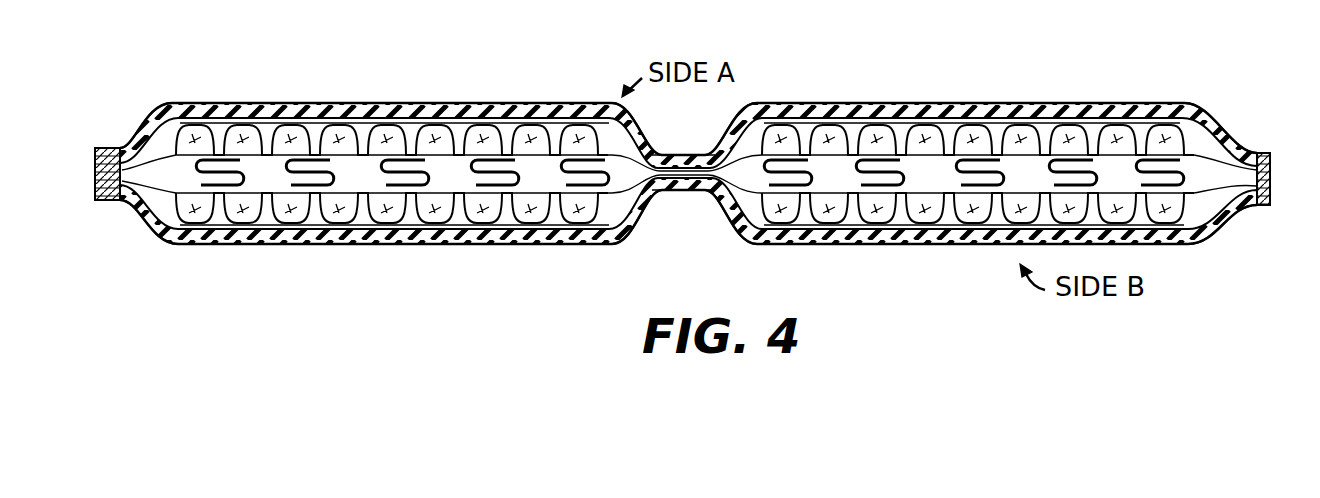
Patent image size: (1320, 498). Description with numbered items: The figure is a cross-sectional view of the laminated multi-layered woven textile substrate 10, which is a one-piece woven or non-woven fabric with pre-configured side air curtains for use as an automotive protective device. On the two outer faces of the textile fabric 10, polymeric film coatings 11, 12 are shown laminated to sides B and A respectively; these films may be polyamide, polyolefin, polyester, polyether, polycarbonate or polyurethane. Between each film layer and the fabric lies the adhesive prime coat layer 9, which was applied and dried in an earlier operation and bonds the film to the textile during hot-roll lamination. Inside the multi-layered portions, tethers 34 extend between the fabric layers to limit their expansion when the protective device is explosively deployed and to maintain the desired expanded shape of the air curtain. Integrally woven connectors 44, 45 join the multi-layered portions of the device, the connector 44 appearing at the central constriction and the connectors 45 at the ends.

The adhesive prime coat layer 9 is at (345, 106).
The multi-layered textile substrate 10 is at (1072, 105).
The polymeric film coating 11 is at (548, 248).
The polymeric film coating 12 is at (537, 110).
The tethers 34 is at (300, 158).
The integrally woven connector 44 is at (678, 195).
The integrally woven connector 45 is at (105, 201).